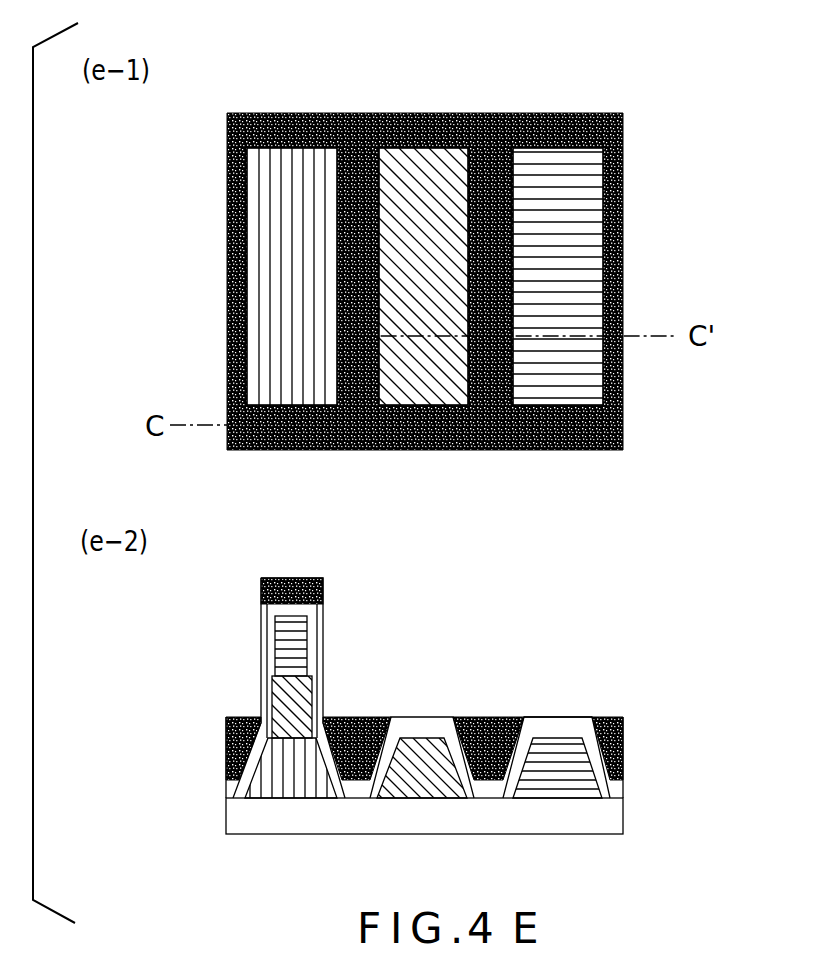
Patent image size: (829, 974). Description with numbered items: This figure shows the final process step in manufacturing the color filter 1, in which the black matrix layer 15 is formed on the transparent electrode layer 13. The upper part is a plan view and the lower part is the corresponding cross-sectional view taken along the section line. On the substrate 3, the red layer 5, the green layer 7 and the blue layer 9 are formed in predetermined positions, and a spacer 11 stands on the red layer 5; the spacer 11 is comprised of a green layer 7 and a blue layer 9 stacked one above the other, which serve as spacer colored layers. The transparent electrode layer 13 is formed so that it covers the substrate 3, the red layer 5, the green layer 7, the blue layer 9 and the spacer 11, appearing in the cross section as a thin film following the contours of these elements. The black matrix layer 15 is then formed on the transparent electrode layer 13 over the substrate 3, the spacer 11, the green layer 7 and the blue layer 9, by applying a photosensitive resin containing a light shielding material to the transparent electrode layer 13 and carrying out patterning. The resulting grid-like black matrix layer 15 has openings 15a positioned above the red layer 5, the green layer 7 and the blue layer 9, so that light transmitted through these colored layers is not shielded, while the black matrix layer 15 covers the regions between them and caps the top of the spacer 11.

The color filter 1 is at (667, 168).
The substrate 3 is at (235, 817).
The red layer 5 is at (293, 373).
The green layer 7 is at (425, 373).
The blue layer 9 is at (560, 375).
The spacer 11 is at (260, 616).
The transparent electrode layer 13 is at (422, 725).
The black matrix layer 15 is at (423, 133).
The openings 15a is at (553, 708).